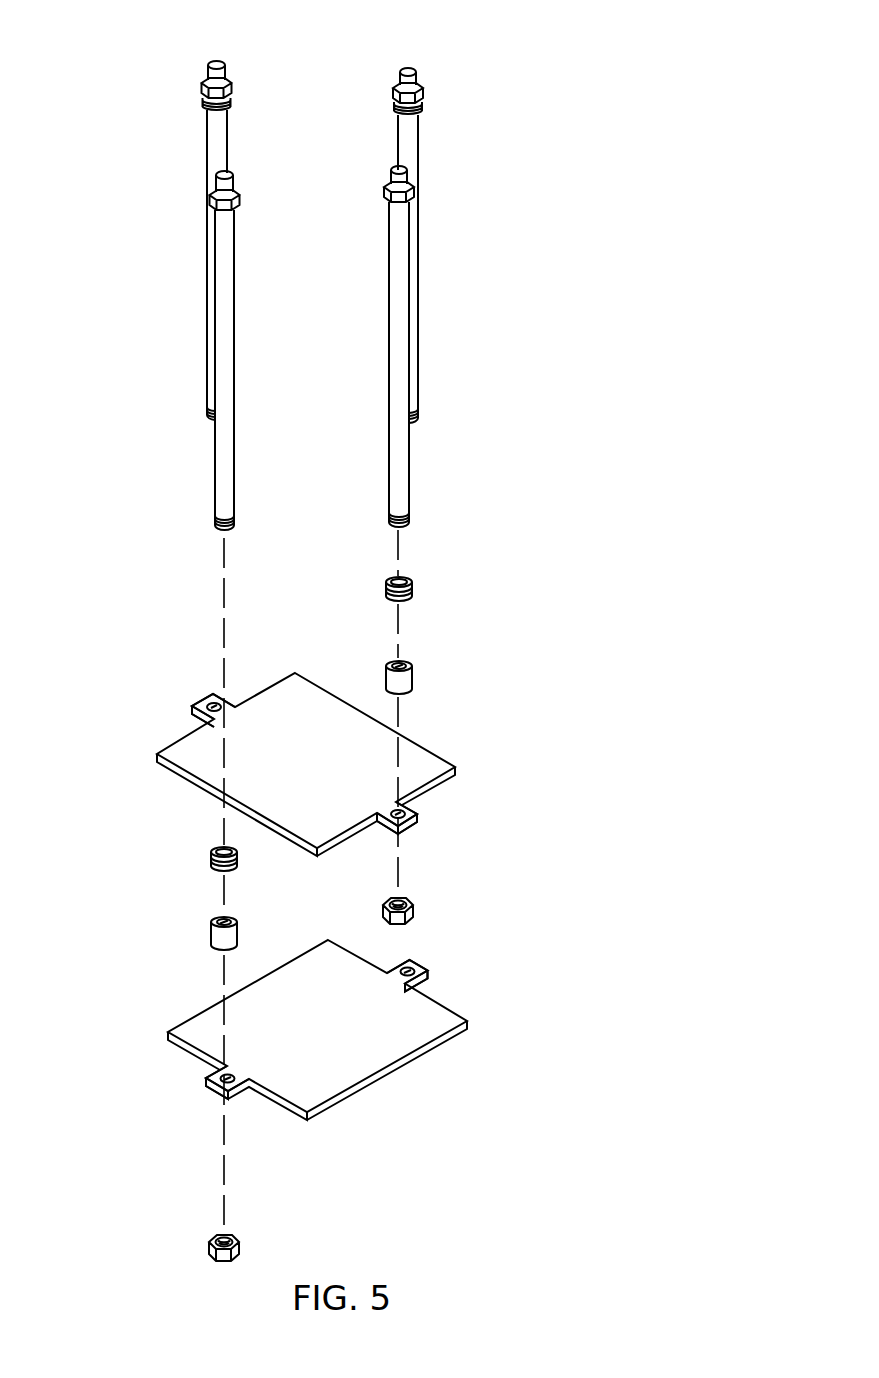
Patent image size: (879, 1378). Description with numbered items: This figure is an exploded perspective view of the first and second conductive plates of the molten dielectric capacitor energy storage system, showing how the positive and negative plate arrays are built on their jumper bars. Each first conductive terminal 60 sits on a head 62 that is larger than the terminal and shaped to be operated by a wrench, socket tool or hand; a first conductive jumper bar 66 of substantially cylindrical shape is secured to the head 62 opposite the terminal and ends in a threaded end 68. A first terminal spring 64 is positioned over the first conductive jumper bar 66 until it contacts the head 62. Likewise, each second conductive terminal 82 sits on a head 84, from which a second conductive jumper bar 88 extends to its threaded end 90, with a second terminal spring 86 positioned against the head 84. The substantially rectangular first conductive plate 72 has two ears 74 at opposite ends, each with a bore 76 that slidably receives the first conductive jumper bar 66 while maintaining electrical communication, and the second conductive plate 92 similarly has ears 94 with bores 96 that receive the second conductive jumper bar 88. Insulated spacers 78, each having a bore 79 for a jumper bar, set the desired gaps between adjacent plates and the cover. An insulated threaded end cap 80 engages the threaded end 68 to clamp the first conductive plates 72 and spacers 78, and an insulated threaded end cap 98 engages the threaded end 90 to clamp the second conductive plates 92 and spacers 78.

The first conductive terminal 60 is at (218, 182).
The head 62 is at (223, 216).
The first terminal spring 64 is at (212, 860).
The first conductive jumper bar 66 is at (235, 317).
The threaded end 68 is at (215, 527).
The first conductive plate 72 is at (378, 1048).
The ear 74 is at (212, 1094).
The bore 76 is at (214, 1073).
The insulated spacer 78 is at (212, 937).
The bore 79 is at (213, 918).
The insulated threaded end cap 80 is at (242, 1242).
The second conductive terminal 82 is at (213, 66).
The head 84 is at (204, 88).
The second terminal spring 86 is at (205, 104).
The second conductive jumper bar 88 is at (207, 143).
The threaded end 90 is at (211, 412).
The second conductive plate 92 is at (418, 760).
The ear 94 is at (195, 707).
The bore 96 is at (213, 700).
The insulated threaded end cap 98 is at (413, 910).